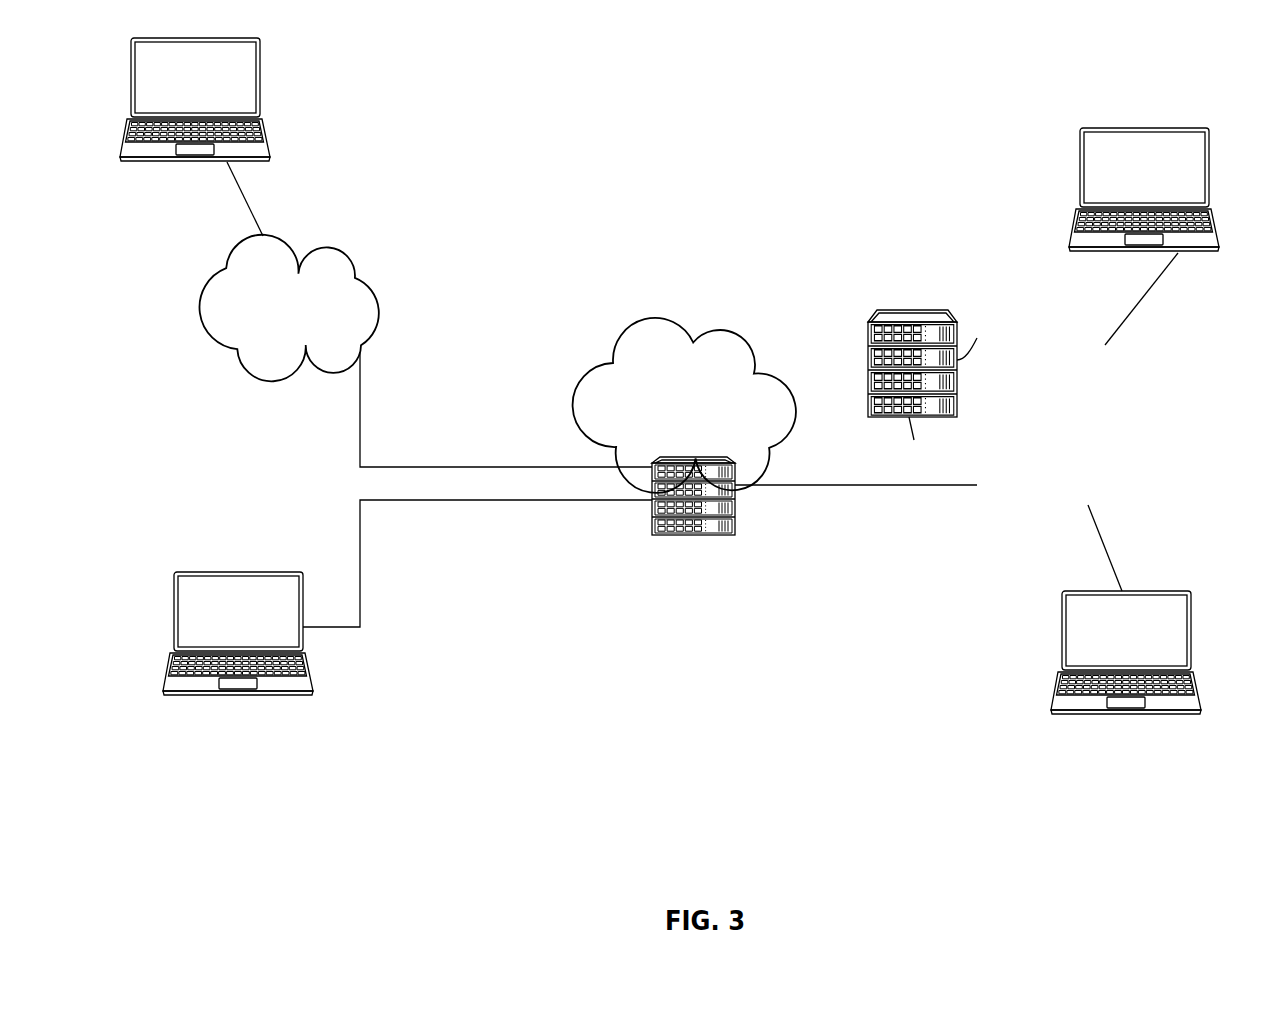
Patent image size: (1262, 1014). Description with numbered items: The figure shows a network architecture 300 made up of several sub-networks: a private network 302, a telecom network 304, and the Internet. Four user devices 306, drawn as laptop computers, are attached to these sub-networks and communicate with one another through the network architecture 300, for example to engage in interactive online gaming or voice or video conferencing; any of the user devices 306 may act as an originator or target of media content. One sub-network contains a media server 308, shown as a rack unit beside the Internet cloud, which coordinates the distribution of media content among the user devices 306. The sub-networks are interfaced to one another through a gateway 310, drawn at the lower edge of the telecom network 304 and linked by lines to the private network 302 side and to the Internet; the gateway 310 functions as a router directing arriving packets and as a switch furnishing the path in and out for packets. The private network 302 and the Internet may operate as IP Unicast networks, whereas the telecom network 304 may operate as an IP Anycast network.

The network architecture 300 is at (1117, 79).
The private network 302 is at (313, 338).
The telecom network 304 is at (669, 434).
The user devices 306 is at (669, 376).
The media server 308 is at (870, 325).
The gateway 310 is at (722, 576).